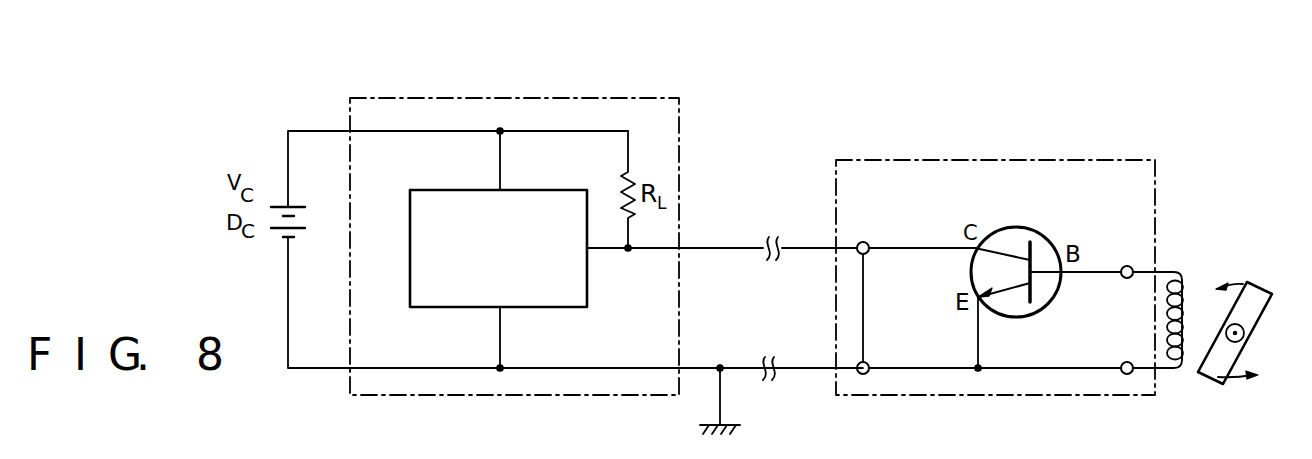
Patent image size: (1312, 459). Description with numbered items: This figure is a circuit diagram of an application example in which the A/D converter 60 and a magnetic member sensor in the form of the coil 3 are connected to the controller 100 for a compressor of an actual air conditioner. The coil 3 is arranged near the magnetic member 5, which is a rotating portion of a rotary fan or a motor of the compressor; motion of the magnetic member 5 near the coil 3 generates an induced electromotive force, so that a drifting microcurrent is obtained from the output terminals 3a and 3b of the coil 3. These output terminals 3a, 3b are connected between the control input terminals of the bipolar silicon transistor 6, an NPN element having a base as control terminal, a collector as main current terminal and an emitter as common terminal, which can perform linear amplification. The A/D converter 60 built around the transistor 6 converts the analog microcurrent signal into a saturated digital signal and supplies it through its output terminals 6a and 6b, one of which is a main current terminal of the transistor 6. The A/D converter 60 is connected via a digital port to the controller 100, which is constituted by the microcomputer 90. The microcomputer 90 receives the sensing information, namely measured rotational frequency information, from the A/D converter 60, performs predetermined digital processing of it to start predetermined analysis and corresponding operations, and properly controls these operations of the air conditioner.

The controller 100 is at (490, 98).
The microcomputer 90 is at (515, 205).
The A/D converter 60 is at (955, 160).
The bipolar silicon transistor 6 is at (1007, 228).
The output terminal 6a is at (869, 363).
The output terminal 6b is at (868, 242).
The coil 3 is at (1186, 290).
The output terminal of coil 3a is at (1125, 266).
The output terminal of coil 3b is at (1122, 362).
The magnetic member 5 is at (1255, 296).